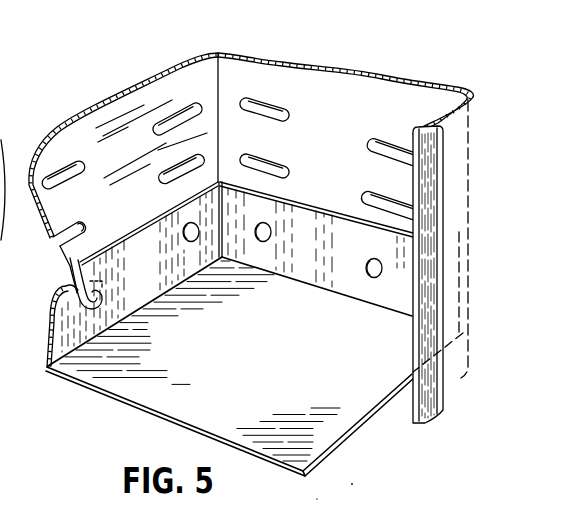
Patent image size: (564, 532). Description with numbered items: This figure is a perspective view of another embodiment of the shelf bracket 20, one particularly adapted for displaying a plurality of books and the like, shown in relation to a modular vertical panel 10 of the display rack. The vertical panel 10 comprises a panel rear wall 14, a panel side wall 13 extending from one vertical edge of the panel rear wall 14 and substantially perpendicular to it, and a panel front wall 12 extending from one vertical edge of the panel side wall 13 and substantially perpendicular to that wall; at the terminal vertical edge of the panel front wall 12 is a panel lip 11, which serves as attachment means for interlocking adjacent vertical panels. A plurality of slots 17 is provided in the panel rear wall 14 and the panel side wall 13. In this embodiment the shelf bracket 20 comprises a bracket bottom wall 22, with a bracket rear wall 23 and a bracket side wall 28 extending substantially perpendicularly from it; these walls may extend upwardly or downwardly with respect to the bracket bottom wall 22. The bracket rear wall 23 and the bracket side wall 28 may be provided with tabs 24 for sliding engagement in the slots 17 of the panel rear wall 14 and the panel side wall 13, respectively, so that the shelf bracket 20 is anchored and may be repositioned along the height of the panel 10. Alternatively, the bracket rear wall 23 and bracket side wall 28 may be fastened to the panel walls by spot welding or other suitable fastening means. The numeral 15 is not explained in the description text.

The modular vertical panel 10 is at (200, 70).
The panel lip 11 is at (440, 212).
The panel front wall 12 is at (452, 158).
The panel side wall 13 is at (347, 82).
The panel rear wall 14 is at (133, 100).
The rolled edge return 15 is at (459, 110).
The slots 17 is at (67, 163).
The shelf bracket 20 is at (152, 390).
The bracket bottom wall 22 is at (112, 381).
The bracket rear wall 23 is at (103, 267).
The tabs 24 is at (63, 287).
The bracket side wall 28 is at (313, 227).